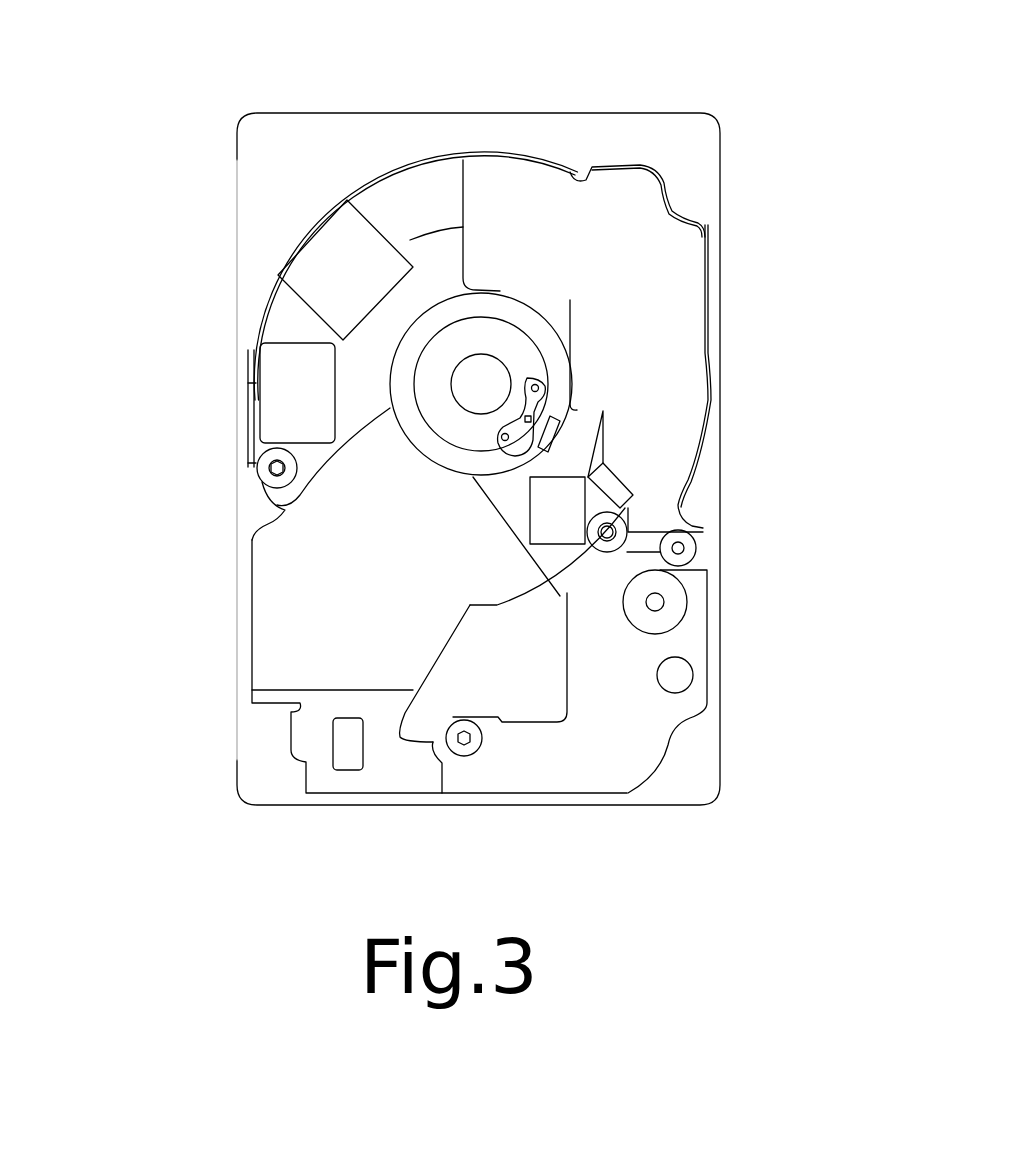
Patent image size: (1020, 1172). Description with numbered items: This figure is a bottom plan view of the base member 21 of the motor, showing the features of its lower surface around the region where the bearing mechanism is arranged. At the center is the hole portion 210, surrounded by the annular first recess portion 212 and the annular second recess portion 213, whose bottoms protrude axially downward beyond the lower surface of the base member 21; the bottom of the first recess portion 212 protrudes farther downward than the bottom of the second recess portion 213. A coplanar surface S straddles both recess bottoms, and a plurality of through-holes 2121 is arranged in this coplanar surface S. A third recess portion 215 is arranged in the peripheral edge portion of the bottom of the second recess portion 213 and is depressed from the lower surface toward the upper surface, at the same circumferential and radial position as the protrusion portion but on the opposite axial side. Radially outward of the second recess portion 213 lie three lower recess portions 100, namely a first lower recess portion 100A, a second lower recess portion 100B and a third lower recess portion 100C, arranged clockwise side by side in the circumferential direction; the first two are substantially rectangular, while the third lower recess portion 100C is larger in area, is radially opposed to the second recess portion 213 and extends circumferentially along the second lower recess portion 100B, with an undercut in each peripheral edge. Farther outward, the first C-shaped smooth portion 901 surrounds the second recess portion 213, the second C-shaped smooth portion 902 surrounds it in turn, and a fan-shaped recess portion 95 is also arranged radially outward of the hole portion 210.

The base member 21 is at (185, 74).
The second C-shaped smooth portion 902 is at (445, 180).
The second recess portion 213 is at (470, 307).
The first recess portion 212 is at (498, 337).
The hole portion 210 is at (487, 368).
The lower recess portions 100 is at (92, 173).
The first lower recess portion 100A is at (290, 372).
The second lower recess portion 100B is at (335, 247).
The third lower recess portion 100C is at (478, 208).
The first C-shaped smooth portion 901 is at (362, 393).
The through-holes 2121 is at (527, 420).
The coplanar surface S is at (547, 398).
The third recess portion 215 is at (577, 410).
The fan-shaped recess portion 95 is at (298, 603).